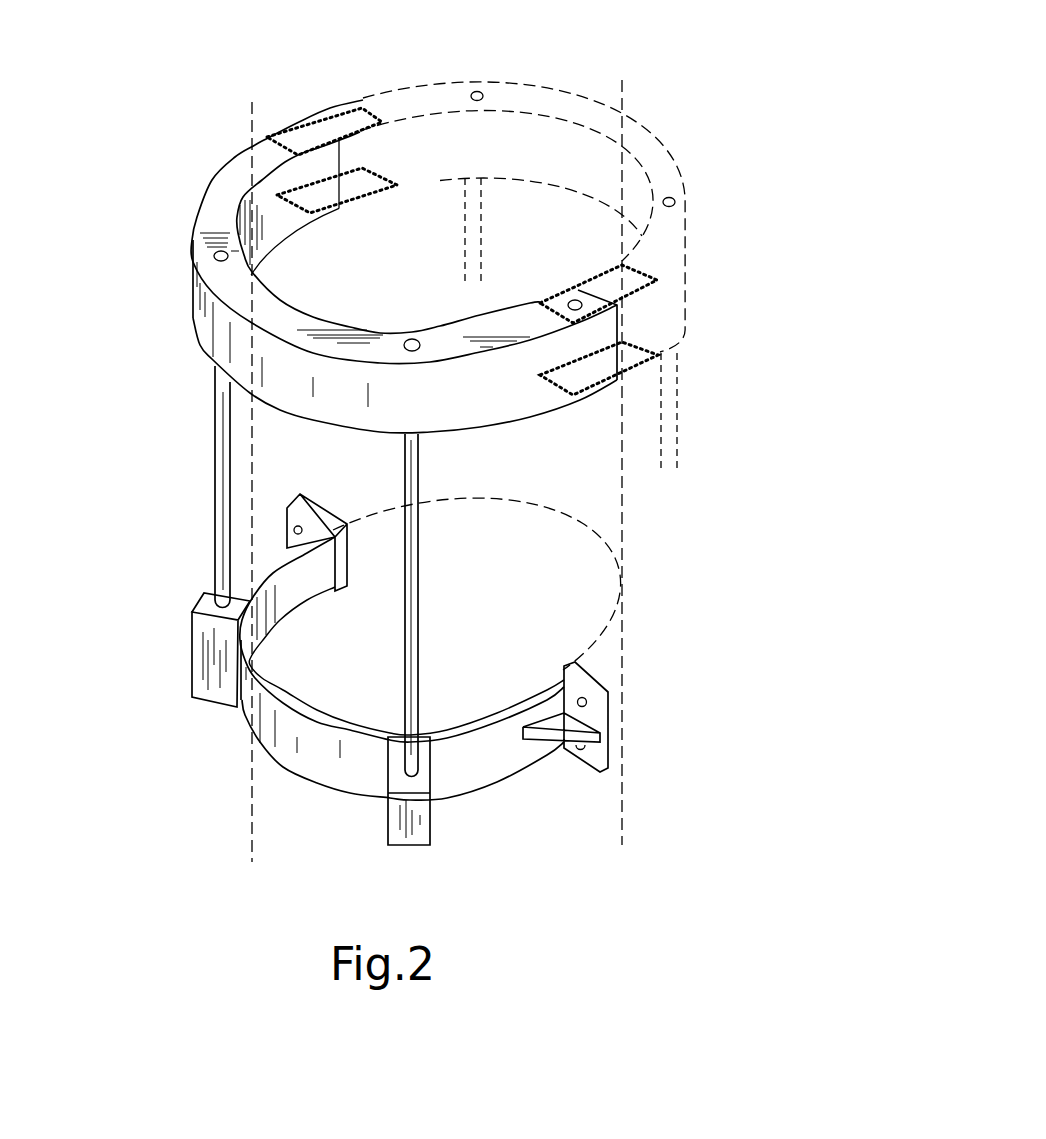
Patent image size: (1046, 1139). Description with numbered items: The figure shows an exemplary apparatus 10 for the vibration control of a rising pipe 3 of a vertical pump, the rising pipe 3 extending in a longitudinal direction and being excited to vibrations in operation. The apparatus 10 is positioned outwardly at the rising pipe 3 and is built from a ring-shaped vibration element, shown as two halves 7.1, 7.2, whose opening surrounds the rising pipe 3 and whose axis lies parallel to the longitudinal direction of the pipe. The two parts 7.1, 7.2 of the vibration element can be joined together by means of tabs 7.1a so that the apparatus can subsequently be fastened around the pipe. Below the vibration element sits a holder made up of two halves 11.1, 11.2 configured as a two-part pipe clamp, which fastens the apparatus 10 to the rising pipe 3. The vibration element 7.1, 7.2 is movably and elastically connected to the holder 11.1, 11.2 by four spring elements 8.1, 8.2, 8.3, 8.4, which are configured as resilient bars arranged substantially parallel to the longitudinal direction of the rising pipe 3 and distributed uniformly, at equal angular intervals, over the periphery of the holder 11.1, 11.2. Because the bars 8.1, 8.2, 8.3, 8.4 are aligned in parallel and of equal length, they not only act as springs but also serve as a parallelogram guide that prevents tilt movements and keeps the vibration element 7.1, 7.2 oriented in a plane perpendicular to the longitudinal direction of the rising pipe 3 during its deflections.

The apparatus 10 is at (657, 73).
The rising pipe 3 is at (625, 452).
The vibration element part 7.1 is at (207, 222).
The vibration element part 7.2 is at (678, 213).
The tabs 7.1a is at (310, 118).
The spring element 8.1 is at (220, 508).
The spring element 8.2 is at (410, 613).
The spring element 8.3 is at (668, 462).
The spring element 8.4 is at (475, 278).
The holder part 11.1 is at (288, 752).
The holder part 11.2 is at (593, 645).